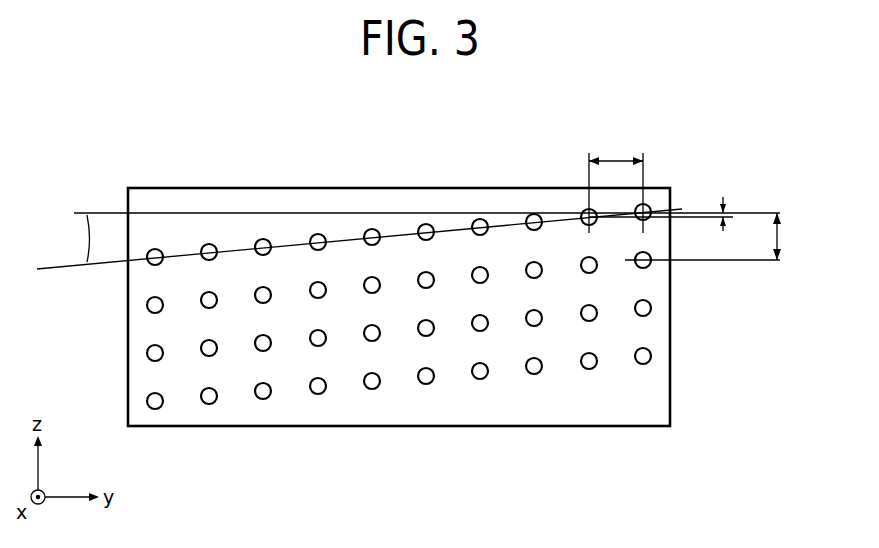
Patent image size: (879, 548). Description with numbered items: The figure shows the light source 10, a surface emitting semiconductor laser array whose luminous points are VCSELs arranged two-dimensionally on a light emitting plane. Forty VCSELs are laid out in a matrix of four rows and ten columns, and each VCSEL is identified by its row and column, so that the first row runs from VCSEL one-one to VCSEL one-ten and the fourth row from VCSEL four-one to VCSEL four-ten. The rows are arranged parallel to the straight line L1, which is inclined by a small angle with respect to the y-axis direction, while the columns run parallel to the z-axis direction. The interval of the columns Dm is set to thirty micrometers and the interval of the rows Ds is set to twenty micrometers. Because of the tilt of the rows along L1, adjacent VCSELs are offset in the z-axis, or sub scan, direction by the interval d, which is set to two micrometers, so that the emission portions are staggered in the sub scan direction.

The light source 10 is at (443, 172).
The straight line L1 is at (348, 245).
The interval of the columns Dm is at (616, 184).
The interval of the adjacent VCSELs in the z-axis direction d is at (730, 217).
The interval of the rows Ds is at (777, 237).